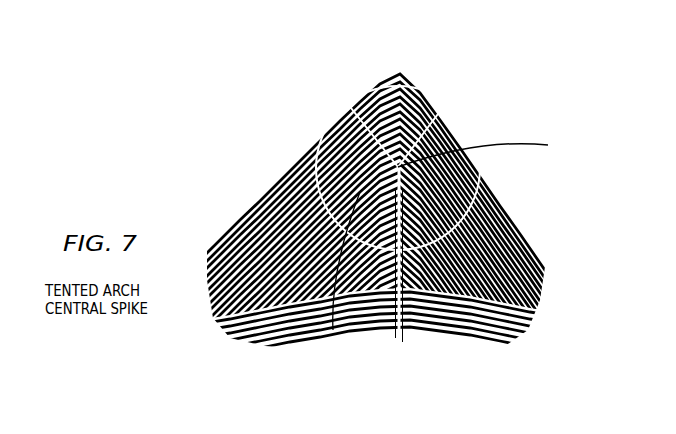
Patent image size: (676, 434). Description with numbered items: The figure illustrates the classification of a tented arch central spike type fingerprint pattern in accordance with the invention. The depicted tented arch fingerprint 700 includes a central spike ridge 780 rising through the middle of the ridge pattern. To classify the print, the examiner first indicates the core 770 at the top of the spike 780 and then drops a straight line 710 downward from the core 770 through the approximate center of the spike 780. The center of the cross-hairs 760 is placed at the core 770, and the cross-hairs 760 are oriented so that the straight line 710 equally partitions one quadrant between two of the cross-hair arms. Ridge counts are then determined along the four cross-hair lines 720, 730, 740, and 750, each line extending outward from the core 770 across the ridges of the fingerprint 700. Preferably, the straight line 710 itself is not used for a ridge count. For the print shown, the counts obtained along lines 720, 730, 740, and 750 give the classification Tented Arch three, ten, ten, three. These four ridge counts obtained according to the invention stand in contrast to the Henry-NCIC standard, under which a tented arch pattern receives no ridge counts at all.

The tented arch fingerprint 700 is at (210, 148).
The straight line 710 is at (402, 342).
The line 720 is at (532, 220).
The line 730 is at (445, 98).
The line 740 is at (347, 100).
The line 750 is at (333, 330).
The cross-hairs 760 is at (398, 138).
The core 770 is at (488, 152).
The central spike ridge 780 is at (396, 338).